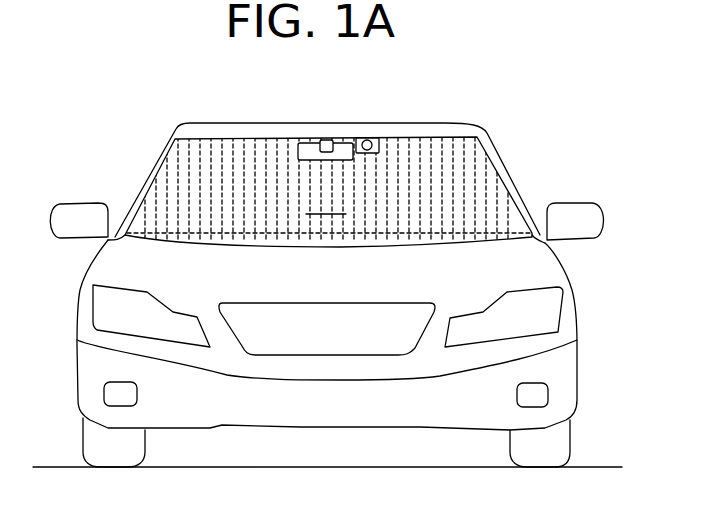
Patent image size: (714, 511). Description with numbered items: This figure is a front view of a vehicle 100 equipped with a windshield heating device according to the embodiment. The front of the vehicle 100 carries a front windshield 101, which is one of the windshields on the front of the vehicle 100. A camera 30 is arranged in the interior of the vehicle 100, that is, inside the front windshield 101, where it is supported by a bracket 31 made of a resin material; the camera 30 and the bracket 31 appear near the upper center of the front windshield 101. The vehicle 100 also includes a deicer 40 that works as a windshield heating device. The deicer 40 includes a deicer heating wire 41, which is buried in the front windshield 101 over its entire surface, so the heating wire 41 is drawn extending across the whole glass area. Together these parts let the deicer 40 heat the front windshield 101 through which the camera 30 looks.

The vehicle 100 is at (327, 261).
The camera 30 is at (380, 138).
The bracket 31 is at (352, 141).
The deicer 40 is at (483, 183).
The deicer heating wire 41 is at (480, 147).
The front windshield 101 is at (329, 204).